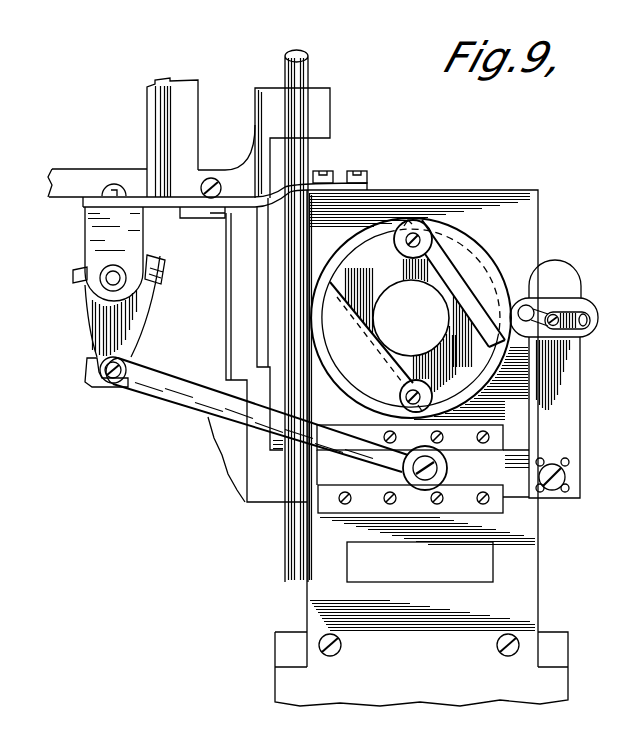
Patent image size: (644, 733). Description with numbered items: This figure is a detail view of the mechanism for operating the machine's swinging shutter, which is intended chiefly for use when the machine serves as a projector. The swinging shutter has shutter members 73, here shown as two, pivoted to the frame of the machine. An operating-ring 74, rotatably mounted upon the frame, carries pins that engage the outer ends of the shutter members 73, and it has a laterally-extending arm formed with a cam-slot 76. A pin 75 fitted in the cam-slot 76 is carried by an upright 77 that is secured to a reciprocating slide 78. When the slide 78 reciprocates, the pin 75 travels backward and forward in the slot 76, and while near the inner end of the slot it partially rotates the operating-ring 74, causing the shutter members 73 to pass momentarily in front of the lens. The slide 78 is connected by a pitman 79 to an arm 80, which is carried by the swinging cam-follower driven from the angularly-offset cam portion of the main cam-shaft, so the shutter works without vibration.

The shutter members 73 is at (417, 316).
The operating-ring 74 is at (476, 246).
The pin 75 is at (572, 327).
The cam-slot 76 is at (588, 318).
The upright 77 is at (578, 392).
The reciprocating slide 78 is at (423, 469).
The pitman 79 is at (173, 383).
The arm 80 is at (140, 318).